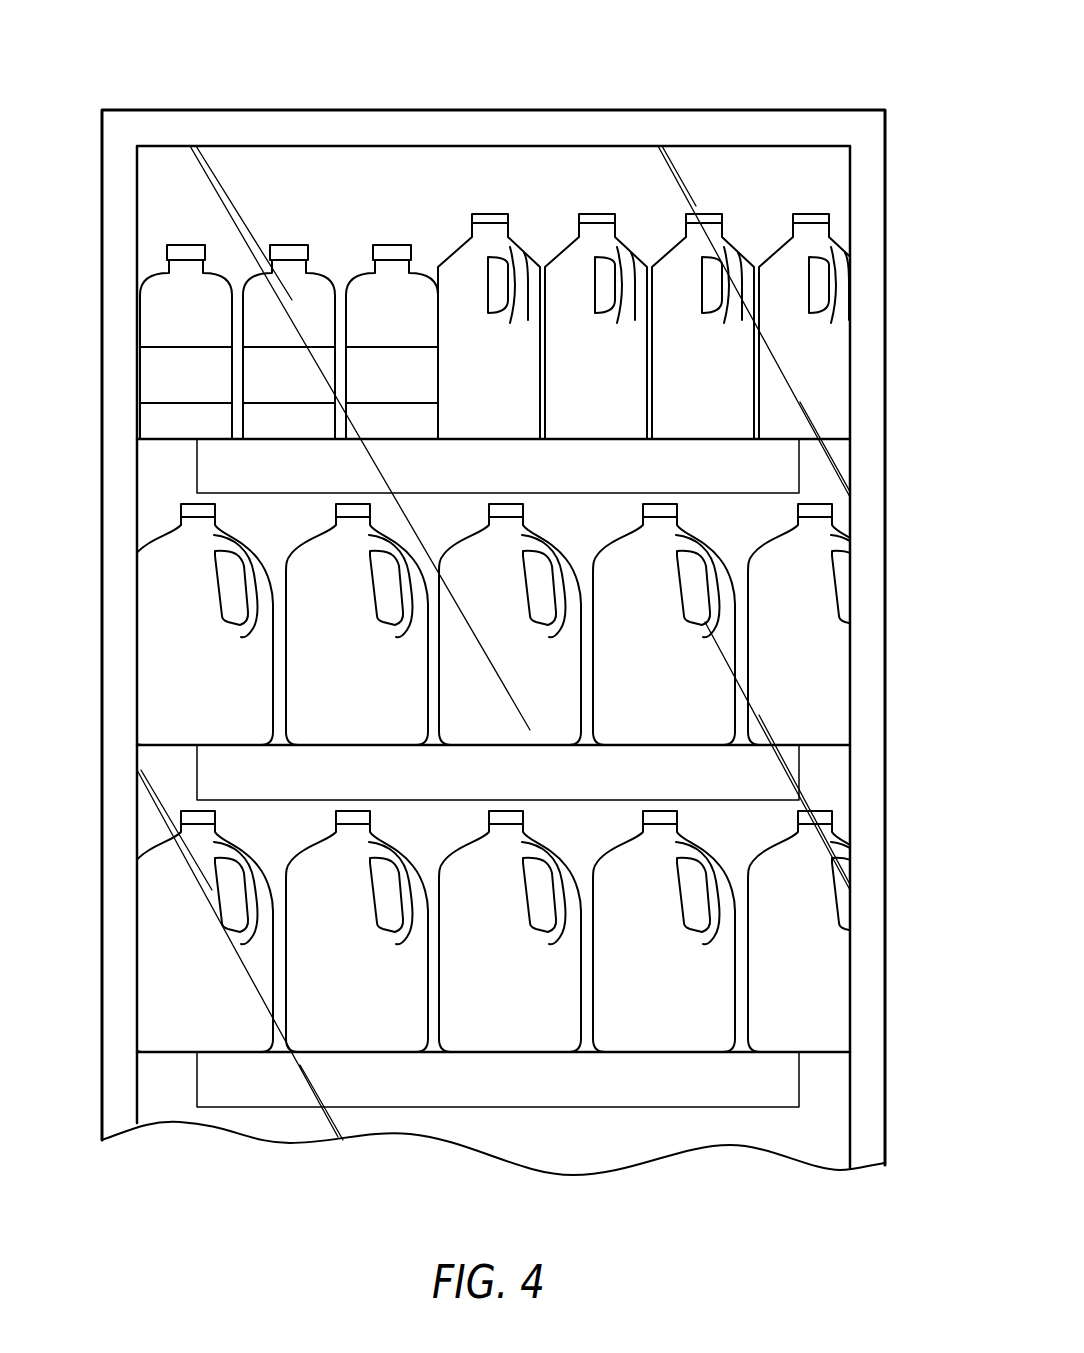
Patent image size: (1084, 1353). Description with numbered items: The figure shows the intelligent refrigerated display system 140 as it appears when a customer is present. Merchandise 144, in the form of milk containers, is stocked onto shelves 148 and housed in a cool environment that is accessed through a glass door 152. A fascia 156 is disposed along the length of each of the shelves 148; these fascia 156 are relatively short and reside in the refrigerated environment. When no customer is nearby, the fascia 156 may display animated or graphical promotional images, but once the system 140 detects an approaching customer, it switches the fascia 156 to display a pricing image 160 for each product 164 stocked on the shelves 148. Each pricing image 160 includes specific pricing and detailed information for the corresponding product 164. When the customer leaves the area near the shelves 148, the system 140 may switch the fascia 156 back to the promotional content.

The intelligent refrigerated display system 140 is at (704, 50).
The glass door 152 is at (413, 178).
The shelves 148 is at (810, 440).
The merchandise 144 is at (788, 610).
The fascia 156 is at (292, 460).
The pricing image 160 is at (762, 770).
The product 164 is at (178, 818).